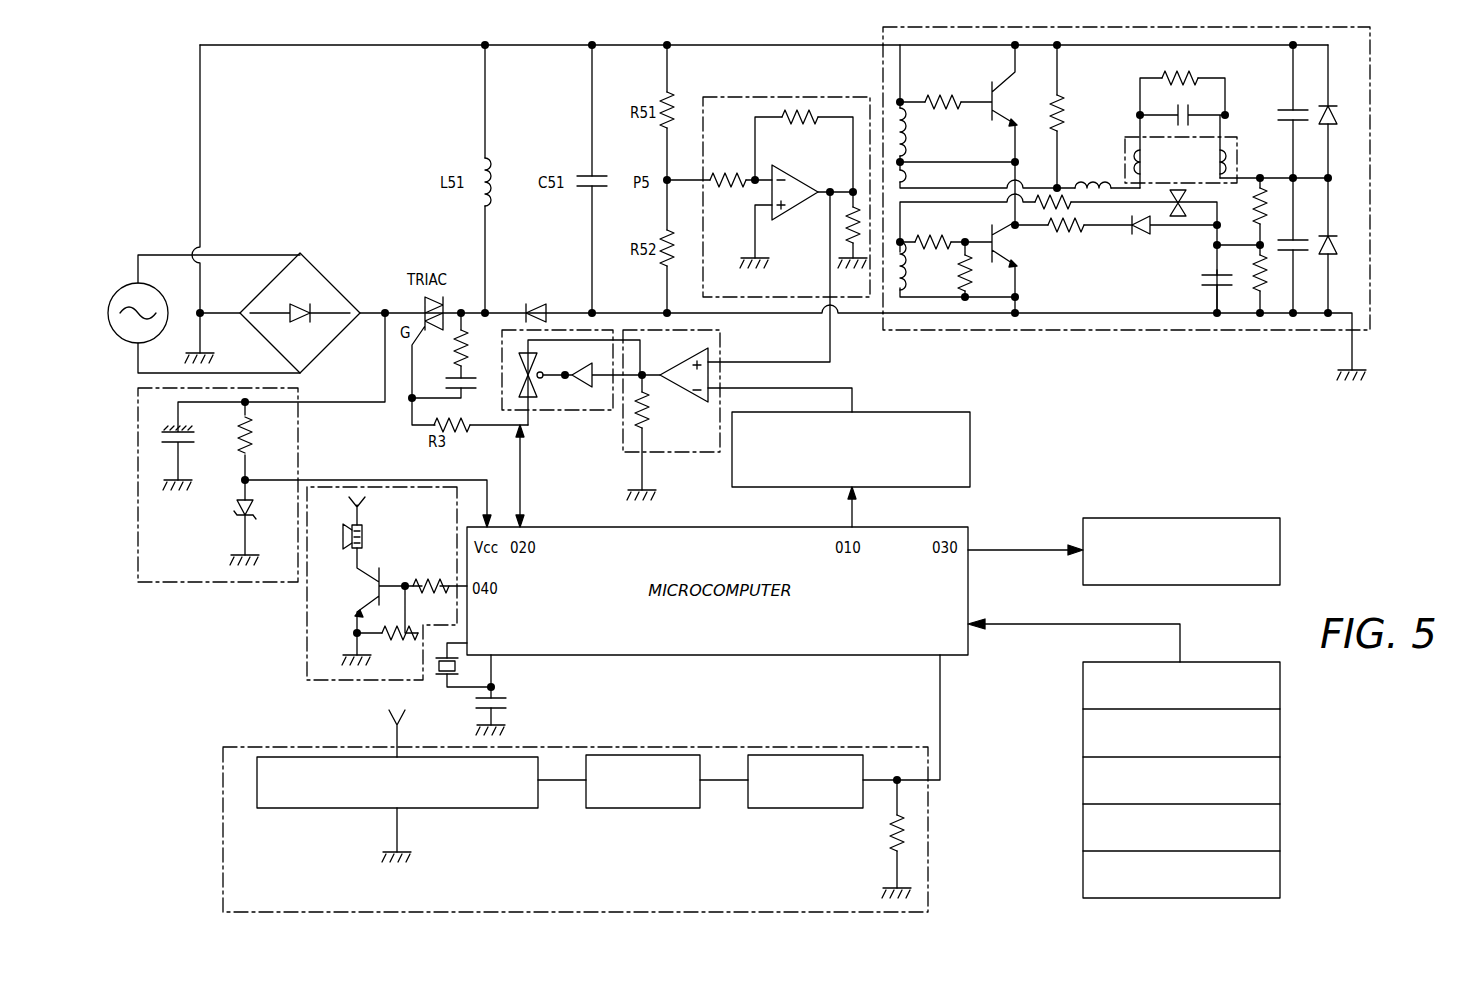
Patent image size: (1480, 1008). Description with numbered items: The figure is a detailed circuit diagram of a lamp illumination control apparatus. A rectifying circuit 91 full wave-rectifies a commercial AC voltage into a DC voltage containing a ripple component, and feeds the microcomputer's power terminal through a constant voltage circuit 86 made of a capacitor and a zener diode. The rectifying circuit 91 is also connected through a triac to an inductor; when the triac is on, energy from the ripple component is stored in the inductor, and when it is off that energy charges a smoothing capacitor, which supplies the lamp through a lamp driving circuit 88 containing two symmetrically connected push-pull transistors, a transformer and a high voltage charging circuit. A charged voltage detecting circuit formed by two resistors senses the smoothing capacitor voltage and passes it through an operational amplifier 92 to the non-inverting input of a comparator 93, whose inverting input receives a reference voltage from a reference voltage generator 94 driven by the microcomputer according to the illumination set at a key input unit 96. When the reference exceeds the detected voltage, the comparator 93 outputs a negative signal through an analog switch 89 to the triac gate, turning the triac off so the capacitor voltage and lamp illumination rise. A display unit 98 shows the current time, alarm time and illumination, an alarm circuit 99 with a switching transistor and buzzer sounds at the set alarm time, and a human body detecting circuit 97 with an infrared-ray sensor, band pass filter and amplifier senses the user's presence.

The constant voltage circuit 86 is at (238, 590).
The lamp driving circuit 88 is at (1153, 333).
The analog switch 89 is at (591, 414).
The rectifying circuit 91 is at (322, 288).
The operational amplifier 92 is at (778, 97).
The comparator 93 is at (707, 456).
The reference voltage generator 94 is at (972, 450).
The key input unit 96 is at (1282, 785).
The human body detecting circuit 97 is at (222, 800).
The display unit 98 is at (1282, 552).
The alarm circuit 99 is at (303, 623).